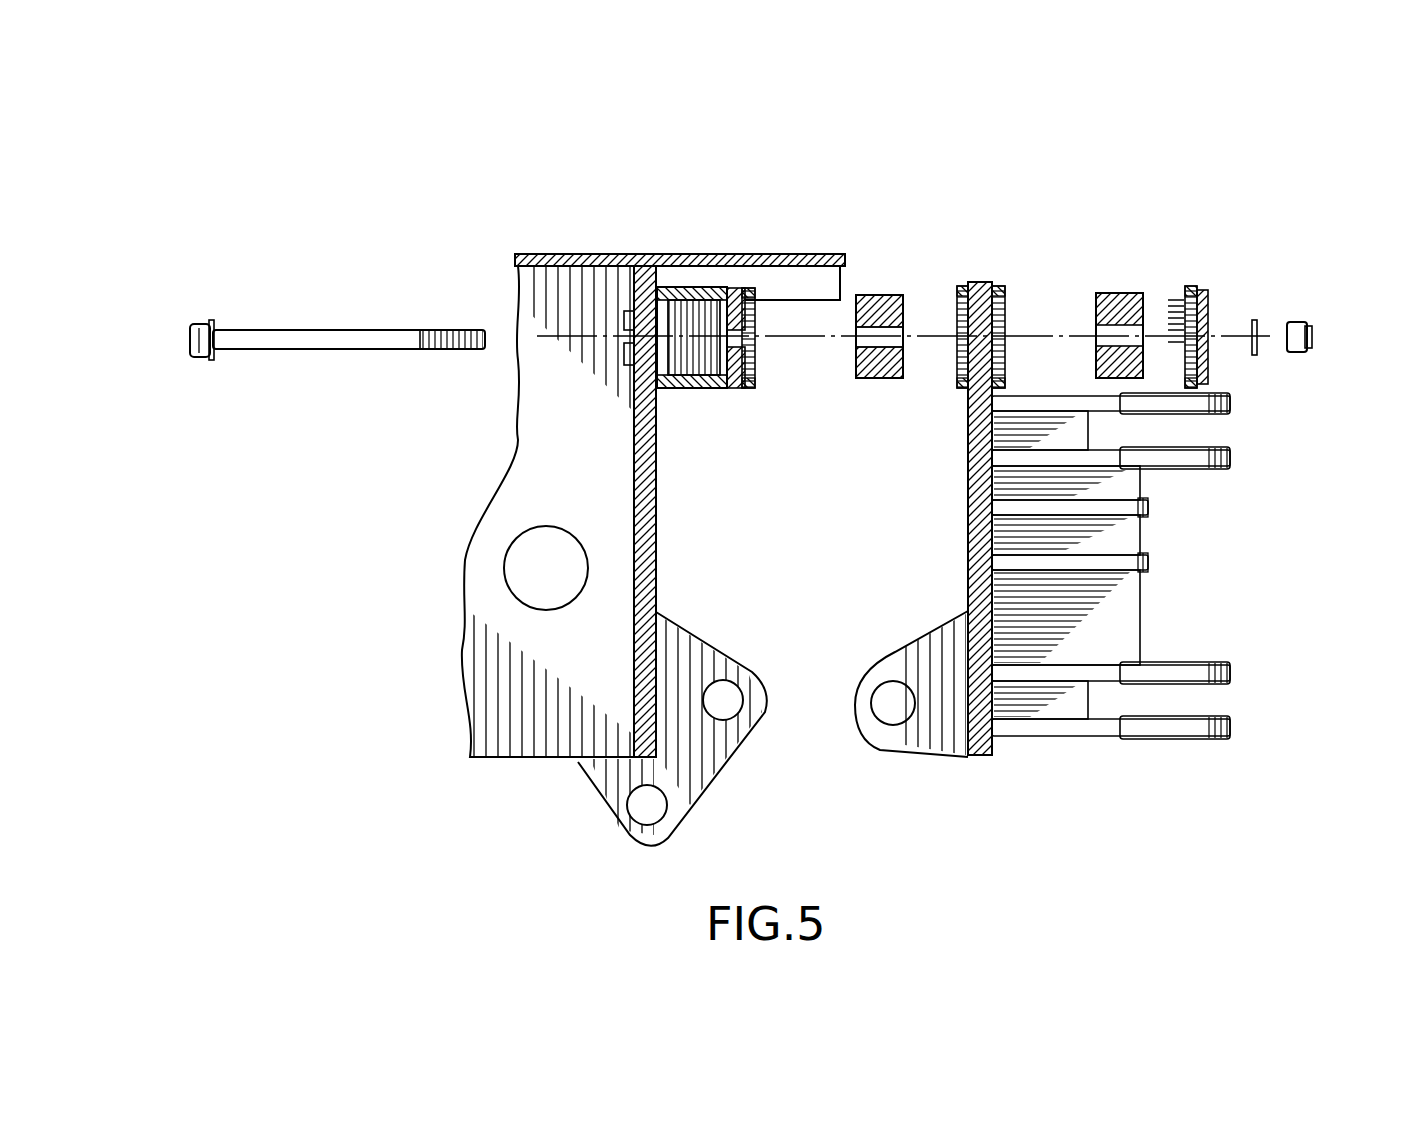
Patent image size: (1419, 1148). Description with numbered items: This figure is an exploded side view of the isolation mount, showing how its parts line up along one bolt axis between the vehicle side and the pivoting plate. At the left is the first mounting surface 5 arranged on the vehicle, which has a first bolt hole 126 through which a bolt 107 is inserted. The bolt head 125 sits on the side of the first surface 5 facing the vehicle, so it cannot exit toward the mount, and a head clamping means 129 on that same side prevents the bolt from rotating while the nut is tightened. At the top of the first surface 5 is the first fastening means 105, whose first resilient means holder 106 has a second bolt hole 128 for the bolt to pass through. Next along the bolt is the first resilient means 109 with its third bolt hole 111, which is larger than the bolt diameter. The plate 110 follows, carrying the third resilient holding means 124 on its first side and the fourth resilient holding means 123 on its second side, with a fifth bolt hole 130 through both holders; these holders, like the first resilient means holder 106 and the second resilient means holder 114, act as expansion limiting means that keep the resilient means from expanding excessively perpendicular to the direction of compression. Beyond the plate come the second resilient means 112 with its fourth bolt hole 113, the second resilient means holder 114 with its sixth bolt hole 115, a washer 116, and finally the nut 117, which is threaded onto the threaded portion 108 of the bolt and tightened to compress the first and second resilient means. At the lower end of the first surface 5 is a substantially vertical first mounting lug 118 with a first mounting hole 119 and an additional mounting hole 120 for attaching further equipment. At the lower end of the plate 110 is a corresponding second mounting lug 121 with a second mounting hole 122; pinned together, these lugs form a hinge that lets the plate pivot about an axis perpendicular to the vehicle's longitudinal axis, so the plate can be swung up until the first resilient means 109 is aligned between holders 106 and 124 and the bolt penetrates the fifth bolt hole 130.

The first mounting surface 5 is at (640, 440).
The first fastening means 105 is at (700, 290).
The first resilient means holder 106 is at (750, 290).
The bolt 107 is at (288, 340).
The threaded portion 108 is at (450, 333).
The first resilient means 109 is at (878, 370).
The plate 110 is at (977, 272).
The third bolt hole 111 is at (925, 305).
The second resilient means 112 is at (1103, 296).
The fourth bolt hole 113 is at (1168, 300).
The second resilient means holder 114 is at (1210, 335).
The sixth bolt hole 115 is at (1232, 330).
The washer 116 is at (1257, 320).
The nut 117 is at (1314, 336).
The first mounting lug 118 is at (690, 775).
The first mounting hole 119 is at (738, 702).
The additional mounting hole 120 is at (648, 806).
The second mounting lug 121 is at (948, 738).
The second mounting hole 122 is at (886, 722).
The fourth resilient holding means 123 is at (998, 285).
The third resilient holding means 124 is at (960, 285).
The bolt head 125 is at (203, 340).
The first bolt hole 126 is at (668, 330).
The second bolt hole 128 is at (750, 350).
The head clamping means 129 is at (628, 330).
The fifth bolt hole 130 is at (985, 325).